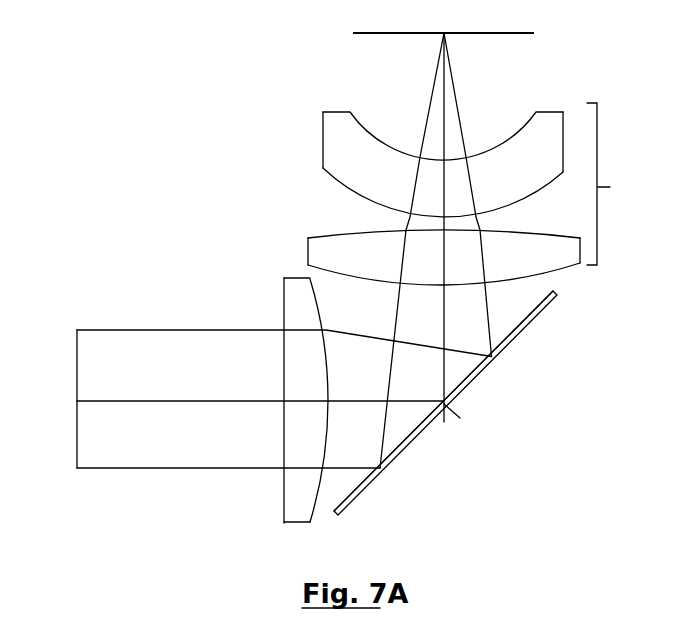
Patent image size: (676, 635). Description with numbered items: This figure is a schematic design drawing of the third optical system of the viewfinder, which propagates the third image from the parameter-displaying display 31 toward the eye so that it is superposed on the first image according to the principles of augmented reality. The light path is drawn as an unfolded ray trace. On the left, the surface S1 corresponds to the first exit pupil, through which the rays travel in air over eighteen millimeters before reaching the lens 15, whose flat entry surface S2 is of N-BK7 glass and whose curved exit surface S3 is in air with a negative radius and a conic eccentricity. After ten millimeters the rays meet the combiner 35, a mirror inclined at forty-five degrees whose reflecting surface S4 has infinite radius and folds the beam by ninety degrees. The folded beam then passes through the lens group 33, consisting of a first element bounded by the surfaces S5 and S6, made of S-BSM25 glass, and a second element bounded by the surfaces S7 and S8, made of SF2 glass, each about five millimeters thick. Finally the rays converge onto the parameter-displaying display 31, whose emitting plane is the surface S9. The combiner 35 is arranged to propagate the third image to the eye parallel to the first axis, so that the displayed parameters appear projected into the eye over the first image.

The parameter-displaying display 31 is at (352, 33).
The image surface S9 is at (470, 36).
The lens group 33 is at (474, 202).
The surface S8 is at (503, 146).
The surface S7 is at (541, 188).
The surface S6 is at (508, 234).
The surface S5 is at (570, 273).
The combiner 35 is at (410, 438).
The surface S4 is at (531, 318).
The collimating lens 15 is at (273, 403).
The surface S3 is at (310, 291).
The surface S2 is at (284, 312).
The surface S1 is at (77, 336).